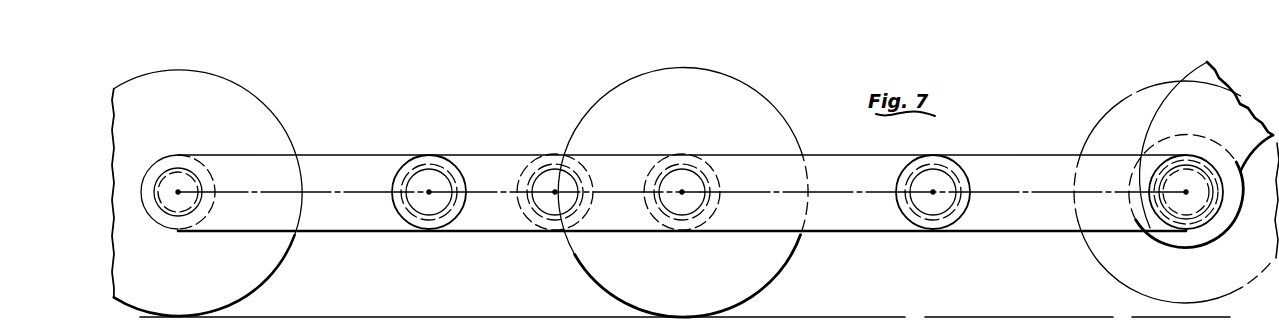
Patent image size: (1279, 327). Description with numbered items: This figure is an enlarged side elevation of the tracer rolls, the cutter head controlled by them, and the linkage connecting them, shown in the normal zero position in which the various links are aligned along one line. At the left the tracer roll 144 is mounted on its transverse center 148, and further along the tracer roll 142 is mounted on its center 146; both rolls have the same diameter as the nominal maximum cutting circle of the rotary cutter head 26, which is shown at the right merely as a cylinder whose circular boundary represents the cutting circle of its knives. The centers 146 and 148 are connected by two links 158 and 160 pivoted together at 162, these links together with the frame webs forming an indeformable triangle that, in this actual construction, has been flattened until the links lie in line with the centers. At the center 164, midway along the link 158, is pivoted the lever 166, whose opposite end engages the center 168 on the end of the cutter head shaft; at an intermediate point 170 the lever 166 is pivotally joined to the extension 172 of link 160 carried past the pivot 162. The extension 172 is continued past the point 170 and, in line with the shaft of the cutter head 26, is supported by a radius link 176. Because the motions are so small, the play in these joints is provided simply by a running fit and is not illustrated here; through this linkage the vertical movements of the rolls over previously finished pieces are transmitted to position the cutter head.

The rotary cutter head 26 is at (1095, 122).
The tracer wheel 142 is at (780, 123).
The tracer wheel 144 is at (268, 240).
The transverse shaft 146 is at (693, 182).
The transverse shaft 148 is at (181, 178).
The link 158 is at (488, 177).
The link 160 is at (342, 157).
The pivot 162 is at (437, 222).
The center 164 is at (539, 170).
The lever 166 is at (845, 175).
The center 168 is at (1175, 200).
The intermediate point 170 is at (952, 170).
The extension 172 is at (845, 203).
The radius link 176 is at (1185, 92).